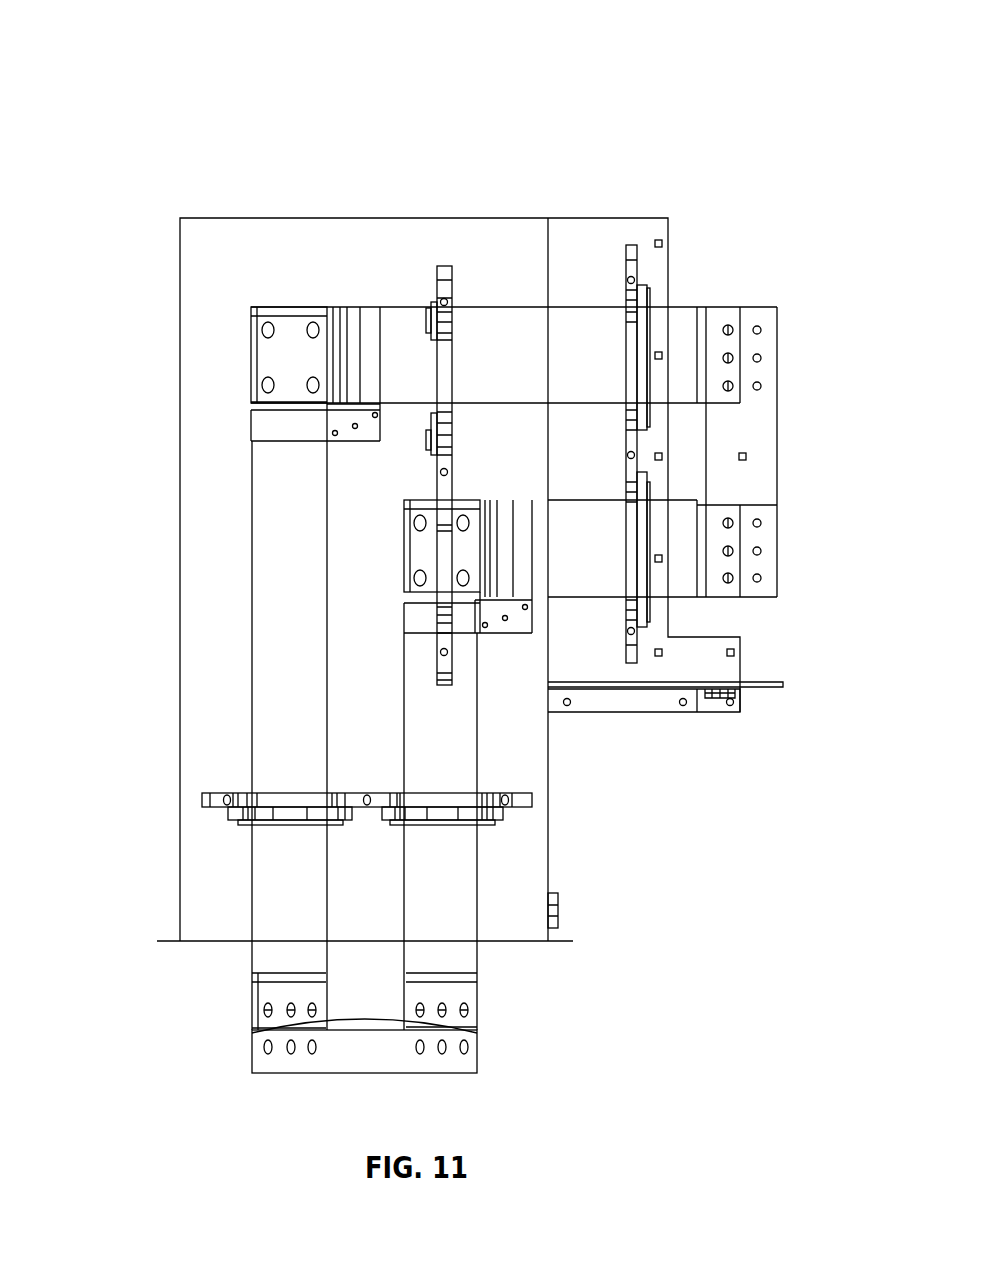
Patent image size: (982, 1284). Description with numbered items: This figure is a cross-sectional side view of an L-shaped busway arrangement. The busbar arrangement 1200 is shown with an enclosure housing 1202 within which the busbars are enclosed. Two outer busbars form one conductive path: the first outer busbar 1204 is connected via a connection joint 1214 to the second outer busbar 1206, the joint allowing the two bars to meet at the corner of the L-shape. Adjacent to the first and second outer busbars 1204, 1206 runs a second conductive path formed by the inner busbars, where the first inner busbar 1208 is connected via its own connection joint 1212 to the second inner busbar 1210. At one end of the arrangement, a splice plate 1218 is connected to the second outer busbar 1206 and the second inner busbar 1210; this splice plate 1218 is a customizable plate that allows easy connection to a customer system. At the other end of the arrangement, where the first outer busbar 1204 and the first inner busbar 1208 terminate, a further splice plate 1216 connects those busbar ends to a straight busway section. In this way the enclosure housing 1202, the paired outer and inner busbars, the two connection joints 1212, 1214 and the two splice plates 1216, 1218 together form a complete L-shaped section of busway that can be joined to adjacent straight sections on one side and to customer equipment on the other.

The busbar arrangement 1200 is at (135, 40).
The enclosure housing 1202 is at (180, 792).
The first outer busbar 1204 is at (503, 307).
The second outer busbar 1206 is at (252, 537).
The first inner busbar 1208 is at (592, 558).
The second inner busbar 1210 is at (457, 878).
The connection joint 1212 is at (423, 500).
The connection joint 1214 is at (251, 327).
The splice plate 1216 is at (777, 458).
The splice plate 1218 is at (248, 1019).